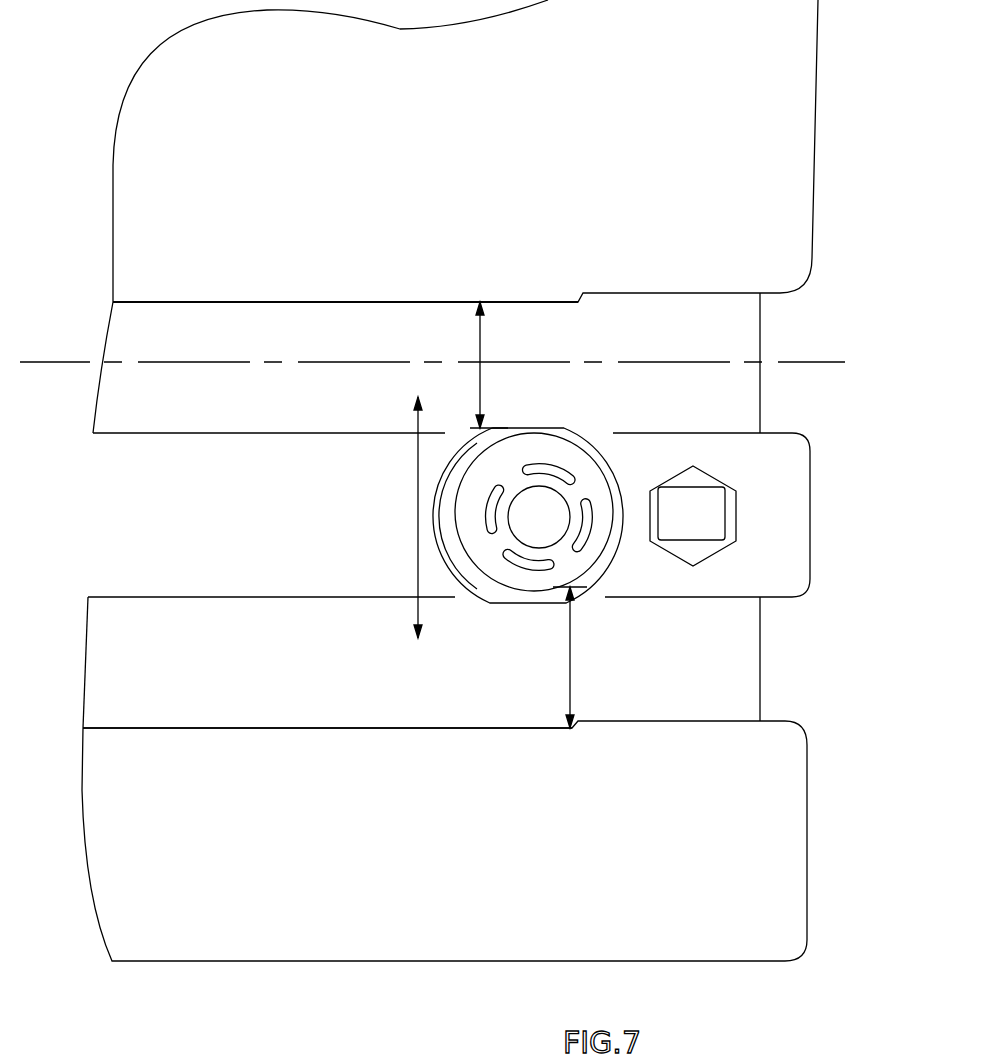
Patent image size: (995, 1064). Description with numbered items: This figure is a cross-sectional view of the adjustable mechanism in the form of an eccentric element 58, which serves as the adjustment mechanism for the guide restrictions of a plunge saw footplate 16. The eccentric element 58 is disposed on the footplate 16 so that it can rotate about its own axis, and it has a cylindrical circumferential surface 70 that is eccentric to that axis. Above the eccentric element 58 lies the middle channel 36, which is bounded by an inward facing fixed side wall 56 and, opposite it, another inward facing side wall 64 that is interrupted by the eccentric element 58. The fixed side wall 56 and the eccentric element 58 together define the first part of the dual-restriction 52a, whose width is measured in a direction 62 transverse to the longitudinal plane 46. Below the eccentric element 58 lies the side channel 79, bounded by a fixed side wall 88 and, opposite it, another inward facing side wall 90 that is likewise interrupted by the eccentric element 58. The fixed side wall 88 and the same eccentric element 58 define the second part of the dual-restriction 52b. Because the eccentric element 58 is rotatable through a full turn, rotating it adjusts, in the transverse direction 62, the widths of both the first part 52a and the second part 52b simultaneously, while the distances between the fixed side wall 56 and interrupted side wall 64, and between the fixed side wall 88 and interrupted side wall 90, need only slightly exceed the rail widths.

The footplate 16 is at (264, 156).
The middle channel 36 is at (244, 346).
The fixed side wall 56 is at (455, 300).
The longitudinal plane 46 is at (808, 360).
The interrupted side wall 64 is at (366, 433).
The transverse direction 62 is at (413, 565).
The first part of dual-restriction 52a is at (482, 345).
The second part of dual-restriction 52b is at (570, 668).
The interrupted side wall 90 is at (683, 598).
The cylindrical circumferential surface 70 is at (573, 433).
The eccentric element 58 is at (546, 458).
The side channel 79 is at (264, 680).
The fixed side wall 88 is at (455, 722).